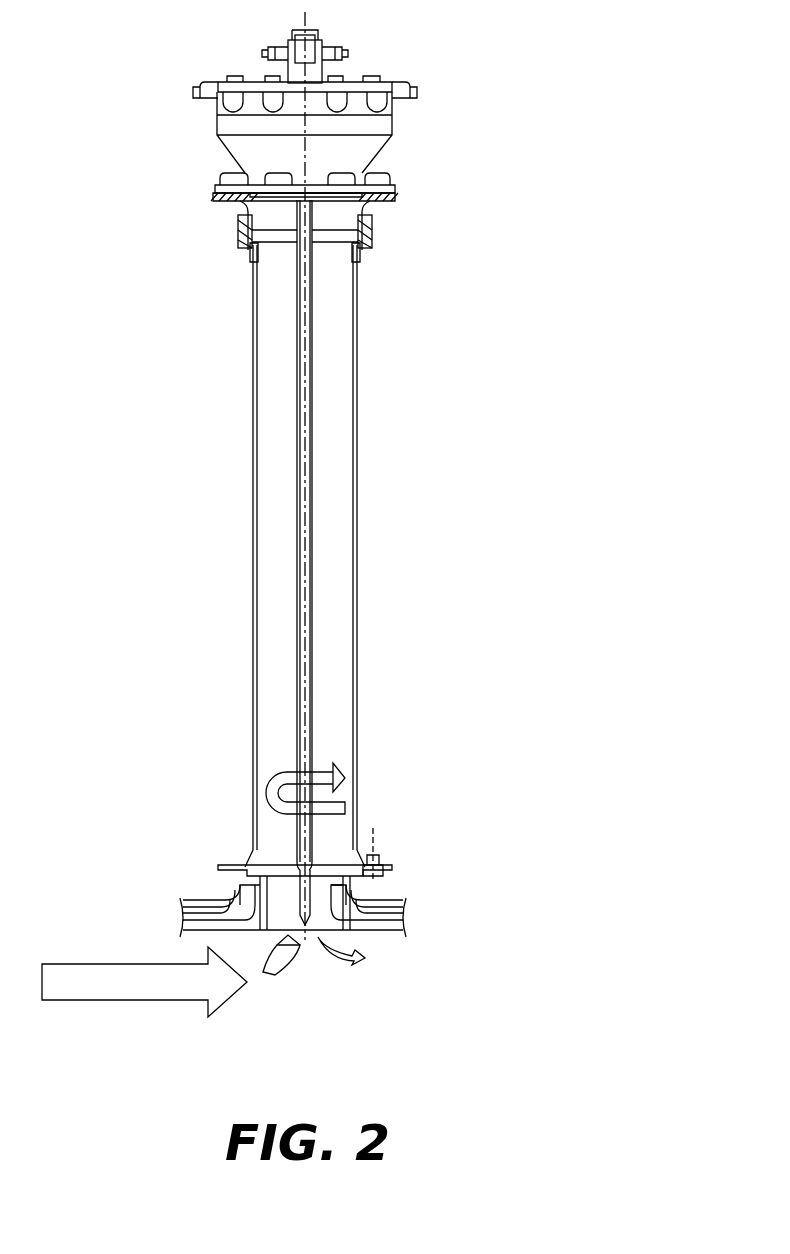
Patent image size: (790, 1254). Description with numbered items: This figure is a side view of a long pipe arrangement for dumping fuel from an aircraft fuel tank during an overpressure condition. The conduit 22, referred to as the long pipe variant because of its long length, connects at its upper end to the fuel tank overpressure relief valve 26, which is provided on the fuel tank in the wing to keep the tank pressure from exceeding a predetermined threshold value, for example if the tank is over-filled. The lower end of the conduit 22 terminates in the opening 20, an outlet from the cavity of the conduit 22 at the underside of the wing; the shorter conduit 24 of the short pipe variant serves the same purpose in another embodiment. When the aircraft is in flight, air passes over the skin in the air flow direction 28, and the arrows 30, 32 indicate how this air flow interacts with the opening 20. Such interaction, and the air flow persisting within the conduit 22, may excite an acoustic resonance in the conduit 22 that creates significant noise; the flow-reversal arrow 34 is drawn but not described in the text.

The opening 20 is at (288, 930).
The conduit 22 is at (253, 608).
The conduit 24 is at (305, 56).
The fuel tank overpressure relief valve 26 is at (258, 134).
The air flow direction 28 is at (127, 963).
The arrow 30 is at (280, 963).
The arrow 32 is at (355, 960).
The flow reversal 34 is at (280, 772).